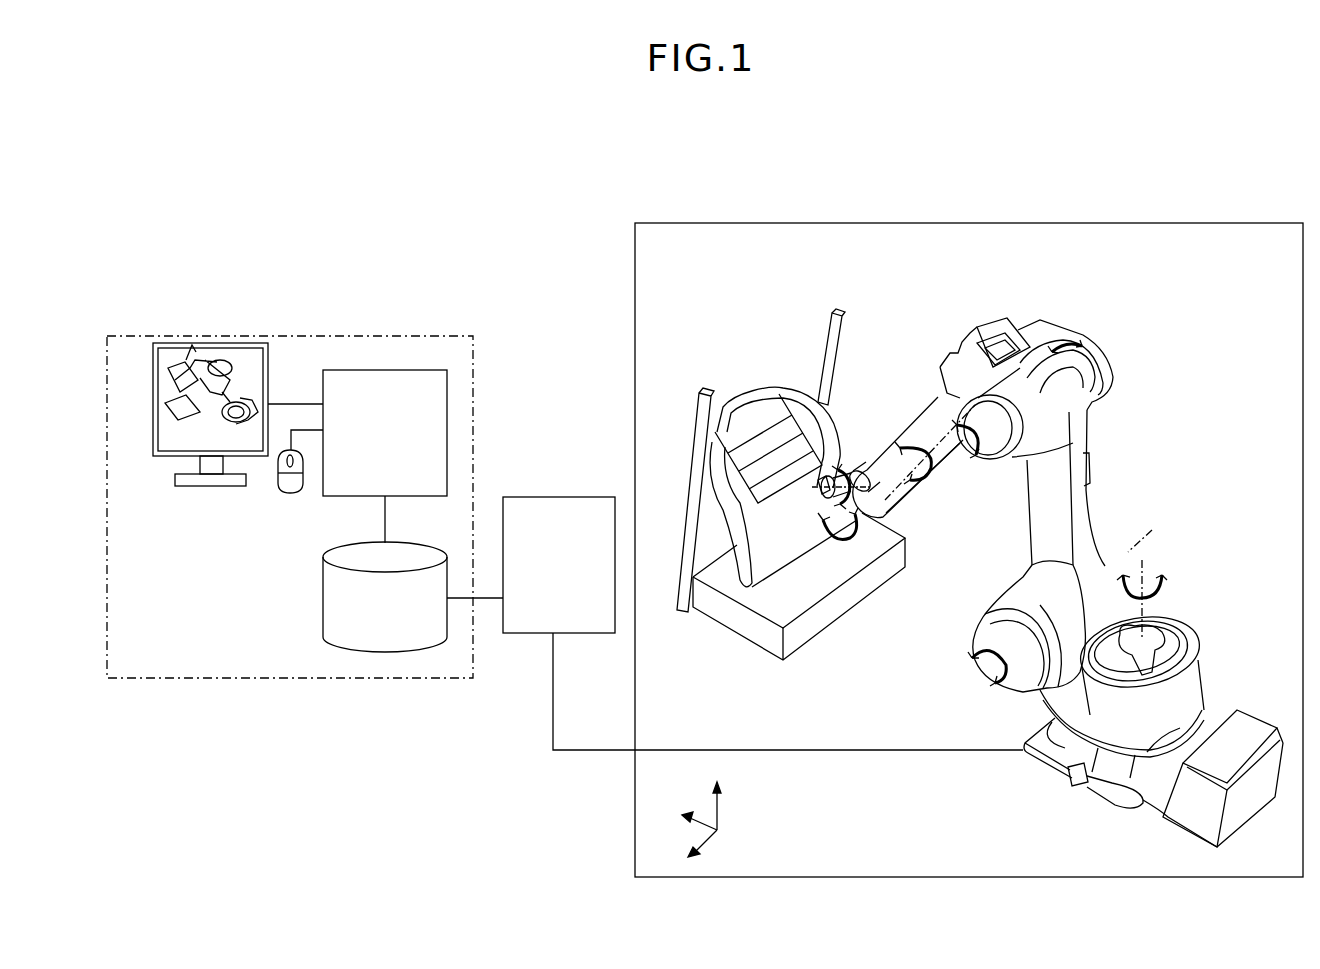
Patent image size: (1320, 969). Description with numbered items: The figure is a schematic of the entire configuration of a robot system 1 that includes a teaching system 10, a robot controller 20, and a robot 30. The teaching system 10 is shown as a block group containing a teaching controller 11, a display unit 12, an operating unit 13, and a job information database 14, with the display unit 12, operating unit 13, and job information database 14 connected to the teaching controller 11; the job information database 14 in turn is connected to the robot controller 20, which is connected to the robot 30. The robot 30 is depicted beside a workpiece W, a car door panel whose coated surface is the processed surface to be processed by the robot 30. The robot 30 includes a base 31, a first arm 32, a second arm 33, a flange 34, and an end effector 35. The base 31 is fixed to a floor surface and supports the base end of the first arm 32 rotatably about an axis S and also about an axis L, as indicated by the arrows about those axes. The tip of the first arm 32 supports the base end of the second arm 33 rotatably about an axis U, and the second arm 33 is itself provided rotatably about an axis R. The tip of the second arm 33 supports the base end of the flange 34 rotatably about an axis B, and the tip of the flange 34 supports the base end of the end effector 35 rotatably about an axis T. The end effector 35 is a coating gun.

The robot system 1 is at (250, 198).
The teaching system 10 is at (410, 337).
The teaching controller 11 is at (387, 370).
The display unit 12 is at (153, 374).
The operating unit 13 is at (290, 495).
The job information database 14 is at (418, 545).
The robot controller 20 is at (575, 497).
The robot 30 is at (1102, 300).
The base 31 is at (1062, 747).
The first arm 32 is at (1080, 502).
The second arm 33 is at (923, 418).
The flange 34 is at (870, 472).
The end effector 35 is at (853, 467).
The workpiece W is at (766, 382).
The axis T is at (813, 482).
The axis B is at (857, 535).
The axis R is at (915, 483).
The axis U is at (1112, 352).
The axis L is at (1000, 660).
The axis S is at (1122, 643).